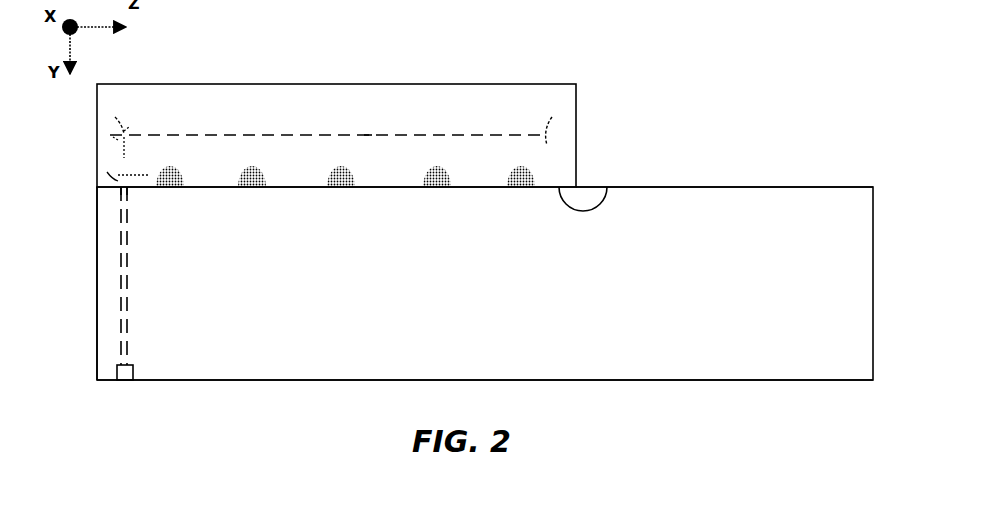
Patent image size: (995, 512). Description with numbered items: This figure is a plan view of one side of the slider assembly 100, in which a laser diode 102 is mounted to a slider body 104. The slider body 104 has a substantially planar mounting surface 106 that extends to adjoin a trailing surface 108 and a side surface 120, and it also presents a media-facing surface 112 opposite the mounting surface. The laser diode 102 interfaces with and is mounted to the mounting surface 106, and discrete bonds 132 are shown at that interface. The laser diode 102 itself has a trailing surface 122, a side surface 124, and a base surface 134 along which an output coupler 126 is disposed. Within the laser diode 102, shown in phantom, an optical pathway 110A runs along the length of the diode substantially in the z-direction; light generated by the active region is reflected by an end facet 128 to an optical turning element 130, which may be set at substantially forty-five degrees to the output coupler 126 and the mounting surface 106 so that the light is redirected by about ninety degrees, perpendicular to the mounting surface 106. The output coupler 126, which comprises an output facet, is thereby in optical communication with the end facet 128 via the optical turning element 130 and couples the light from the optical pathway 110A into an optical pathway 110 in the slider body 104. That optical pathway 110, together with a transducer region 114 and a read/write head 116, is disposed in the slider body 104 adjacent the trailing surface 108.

The slider assembly 100 is at (738, 70).
The laser diode 102 is at (377, 100).
The slider body 104 is at (486, 239).
The mounting surface 106 is at (684, 187).
The trailing surface 108 is at (97, 286).
The optical pathway 110 is at (129, 266).
The optical pathway 110A is at (368, 132).
The media-facing surface 112 is at (548, 380).
The transducer region 114 is at (123, 380).
The read/write head 116 is at (128, 380).
The side surface 120 is at (459, 295).
The trailing surface 122 is at (97, 135).
The side surface 124 is at (302, 118).
The output coupler 126 is at (97, 167).
The end facet 128 is at (553, 117).
The optical turning element 130 is at (106, 110).
The discrete bonds 132 is at (532, 170).
The base surface 134 is at (606, 187).